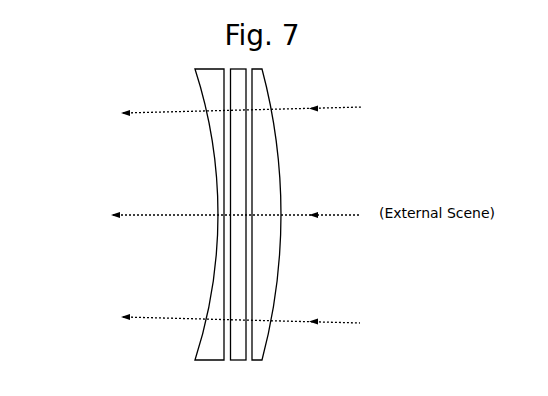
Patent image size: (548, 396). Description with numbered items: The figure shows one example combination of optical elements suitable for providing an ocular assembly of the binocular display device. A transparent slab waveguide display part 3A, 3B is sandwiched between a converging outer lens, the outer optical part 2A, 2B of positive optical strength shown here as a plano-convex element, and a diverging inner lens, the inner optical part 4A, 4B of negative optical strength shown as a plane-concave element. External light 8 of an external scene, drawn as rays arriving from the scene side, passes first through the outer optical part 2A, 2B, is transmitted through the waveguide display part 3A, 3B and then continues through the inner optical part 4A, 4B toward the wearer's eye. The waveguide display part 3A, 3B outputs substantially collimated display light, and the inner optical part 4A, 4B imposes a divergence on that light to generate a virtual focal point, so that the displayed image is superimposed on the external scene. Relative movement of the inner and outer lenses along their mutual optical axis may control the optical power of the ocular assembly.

The outer optical part 2A is at (346, 214).
The outer optical part 2B is at (276, 154).
The transparent slab waveguide display part 3A is at (139, 214).
The transparent slab waveguide display part 3B is at (233, 268).
The inner optical part 4A is at (140, 214).
The inner optical part 4B is at (213, 154).
The external light 8 is at (333, 105).